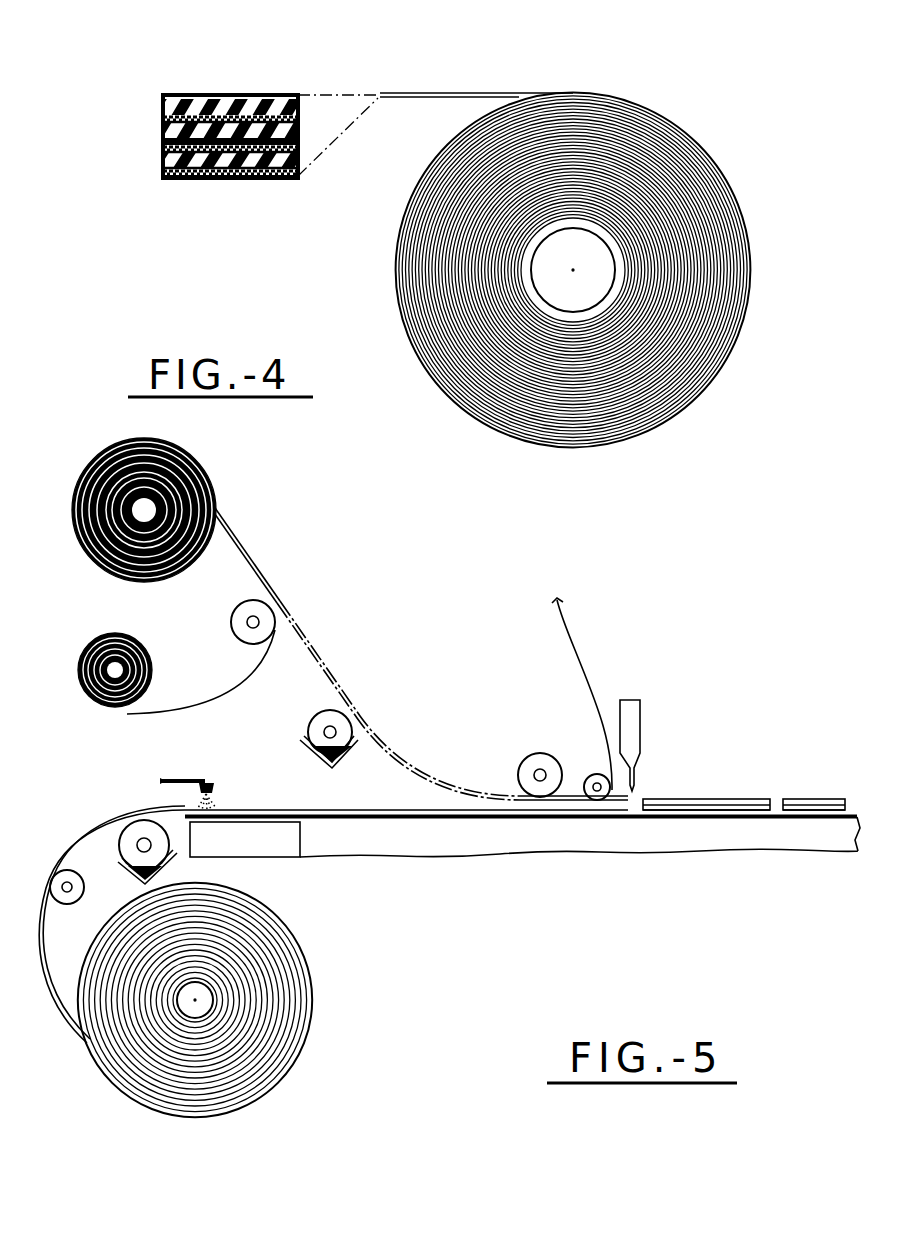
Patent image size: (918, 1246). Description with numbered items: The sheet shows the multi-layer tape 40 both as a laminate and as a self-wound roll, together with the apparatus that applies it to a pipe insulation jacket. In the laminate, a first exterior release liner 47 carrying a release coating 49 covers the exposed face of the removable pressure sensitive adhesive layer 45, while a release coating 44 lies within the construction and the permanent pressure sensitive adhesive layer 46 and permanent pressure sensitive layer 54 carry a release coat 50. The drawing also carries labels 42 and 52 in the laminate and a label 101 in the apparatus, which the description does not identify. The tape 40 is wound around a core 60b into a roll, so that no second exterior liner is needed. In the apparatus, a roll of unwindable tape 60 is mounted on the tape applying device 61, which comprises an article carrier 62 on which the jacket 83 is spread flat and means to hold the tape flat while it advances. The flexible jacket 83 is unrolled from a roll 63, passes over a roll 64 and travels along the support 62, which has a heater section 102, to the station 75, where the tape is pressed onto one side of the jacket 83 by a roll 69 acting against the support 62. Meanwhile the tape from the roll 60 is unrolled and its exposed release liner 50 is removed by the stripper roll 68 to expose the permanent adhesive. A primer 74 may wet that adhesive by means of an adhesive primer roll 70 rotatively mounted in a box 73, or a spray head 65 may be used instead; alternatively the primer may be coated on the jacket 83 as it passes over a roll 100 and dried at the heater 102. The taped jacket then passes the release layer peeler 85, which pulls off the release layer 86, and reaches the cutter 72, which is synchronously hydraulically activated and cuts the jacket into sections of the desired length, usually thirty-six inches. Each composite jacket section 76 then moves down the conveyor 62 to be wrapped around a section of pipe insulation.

In FIG. 4, the tape 40 is at (390, 92).
In FIG. 4, the pressure sensitive adhesive layer 42 is at (167, 130).
In FIG. 4, the release coating 44 is at (167, 143).
In FIG. 4, the removable pressure sensitive adhesive layer 45 is at (165, 117).
In FIG. 4, the permanent pressure sensitive adhesive layer 46 is at (167, 157).
In FIG. 4, the first exterior release liner 47 is at (185, 97).
In FIG. 4, the release coating 49 is at (165, 103).
In FIG. 4, the release coat 50 is at (213, 178).
In FIG. 5, the release coat 50 is at (240, 683).
In FIG. 4, the adhesive layer 52 is at (167, 165).
In FIG. 4, the permanent pressure sensitive layer 54 is at (167, 173).
In FIG. 5, the roll of unwindable tape 60 is at (194, 466).
In FIG. 4, the core 60b is at (552, 253).
In FIG. 5, the tape applying device 61 is at (614, 870).
In FIG. 5, the article carrier 62 is at (555, 851).
In FIG. 5, the roll 63 is at (303, 955).
In FIG. 5, the roll 64 is at (84, 888).
In FIG. 5, the spray head 65 is at (204, 778).
In FIG. 5, the stripper roll 68 is at (236, 612).
In FIG. 5, the roll 69 is at (528, 757).
In FIG. 5, the adhesive primer roll 70 is at (318, 712).
In FIG. 5, the cutter 72 is at (641, 730).
In FIG. 5, the box 73 is at (318, 759).
In FIG. 5, the primer 74 is at (310, 736).
In FIG. 5, the station 75 is at (454, 830).
In FIG. 5, the composite jacket section 76 is at (713, 793).
In FIG. 5, the jacket 83 is at (385, 809).
In FIG. 5, the release layer peeler 85 is at (592, 772).
In FIG. 5, the release layer 86 is at (573, 620).
In FIG. 5, the roll 100 is at (145, 823).
In FIG. 5, the trough 101 is at (118, 860).
In FIG. 5, the heater section 102 is at (275, 852).